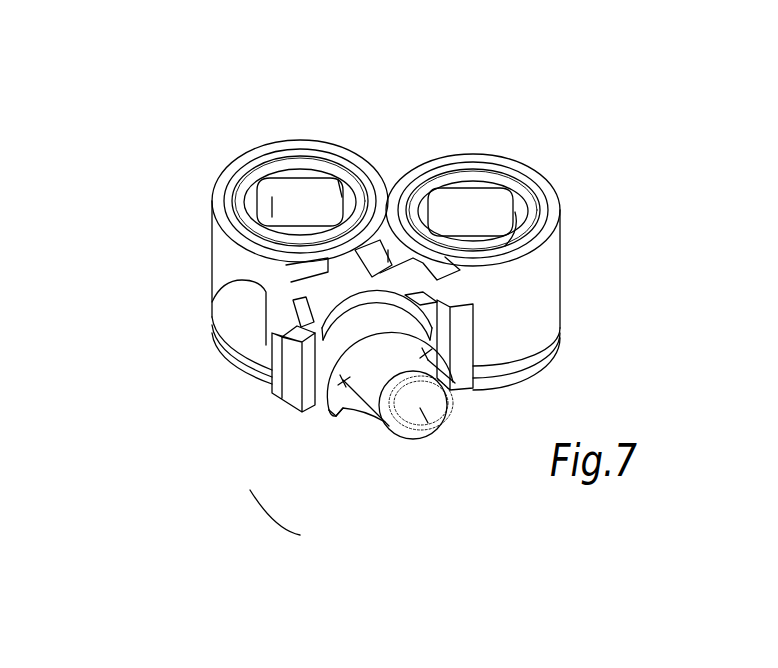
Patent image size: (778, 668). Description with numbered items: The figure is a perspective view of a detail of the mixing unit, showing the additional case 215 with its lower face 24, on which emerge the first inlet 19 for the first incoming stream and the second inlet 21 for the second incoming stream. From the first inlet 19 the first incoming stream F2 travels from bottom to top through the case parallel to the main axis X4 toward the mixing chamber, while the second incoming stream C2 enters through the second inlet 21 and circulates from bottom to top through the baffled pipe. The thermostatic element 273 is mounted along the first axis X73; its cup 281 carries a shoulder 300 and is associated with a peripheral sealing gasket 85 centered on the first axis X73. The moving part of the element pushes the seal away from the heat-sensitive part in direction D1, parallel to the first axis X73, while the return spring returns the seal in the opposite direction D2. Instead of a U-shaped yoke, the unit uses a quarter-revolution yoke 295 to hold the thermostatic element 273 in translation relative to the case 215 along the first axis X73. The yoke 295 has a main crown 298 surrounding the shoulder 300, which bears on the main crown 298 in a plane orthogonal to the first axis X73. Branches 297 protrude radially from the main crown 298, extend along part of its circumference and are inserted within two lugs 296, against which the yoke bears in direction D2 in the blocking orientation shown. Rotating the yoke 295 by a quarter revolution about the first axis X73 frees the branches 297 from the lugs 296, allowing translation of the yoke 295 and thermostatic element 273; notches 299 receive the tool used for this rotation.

The second inlet 21 is at (273, 150).
The first inlet 19 is at (492, 208).
The lower face 24 is at (392, 168).
The lugs 296 is at (262, 280).
The branches 297 is at (305, 181).
The quarter-revolution yoke 295 is at (474, 305).
The shoulder 300 is at (370, 303).
The main crown 298 is at (388, 327).
The peripheral sealing gasket 85 is at (379, 391).
The cup 281 is at (345, 410).
The notches 299 is at (333, 416).
The thermostatic element 273 is at (270, 515).
The additional case 215 is at (132, 285).
The first axis X73 is at (222, 147).
The main axis X4 is at (385, 245).
The direction D1 is at (195, 108).
The direction D2 is at (487, 502).
The second incoming stream C2 is at (295, 226).
The first incoming stream F2 is at (457, 224).